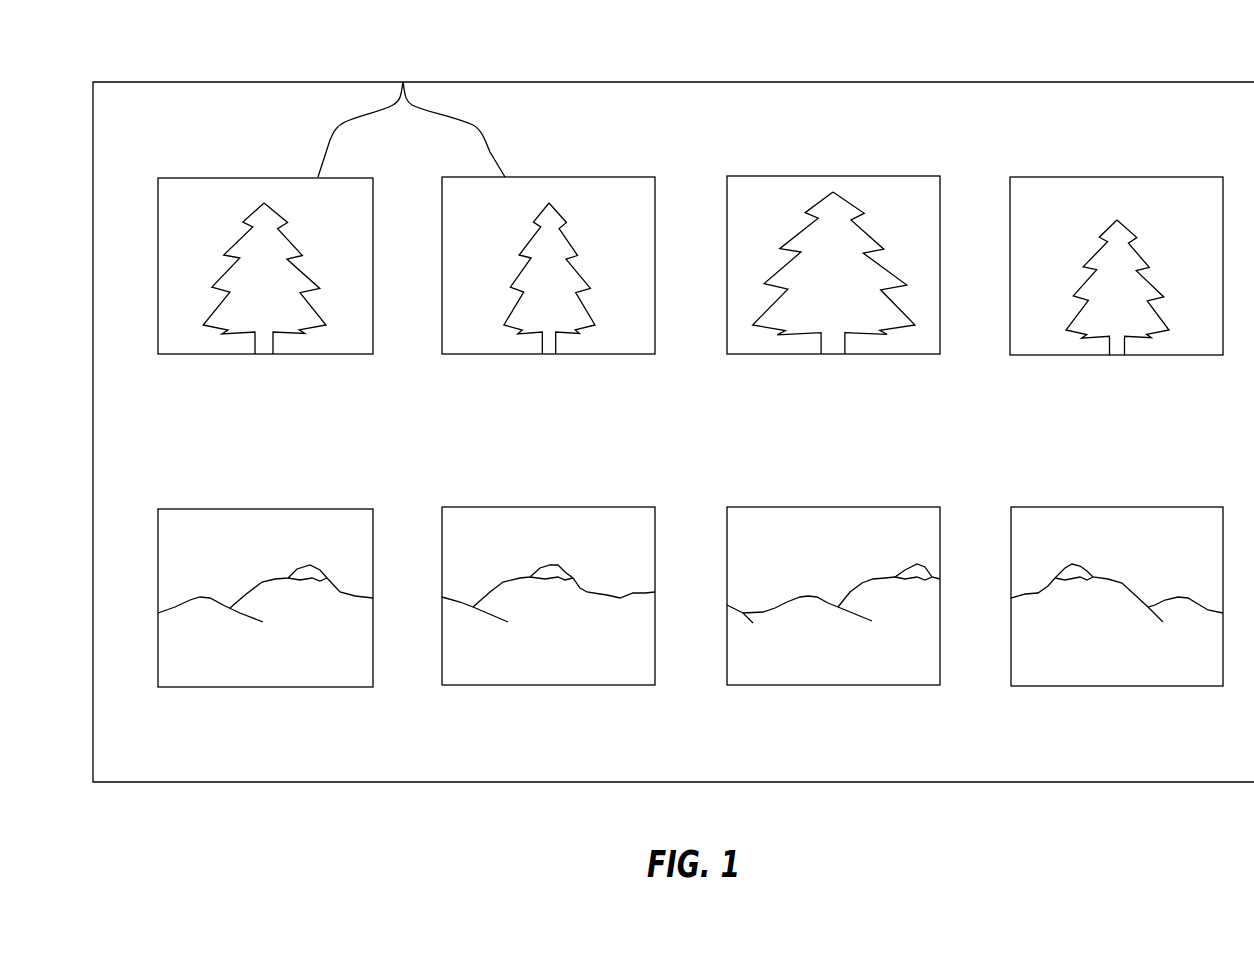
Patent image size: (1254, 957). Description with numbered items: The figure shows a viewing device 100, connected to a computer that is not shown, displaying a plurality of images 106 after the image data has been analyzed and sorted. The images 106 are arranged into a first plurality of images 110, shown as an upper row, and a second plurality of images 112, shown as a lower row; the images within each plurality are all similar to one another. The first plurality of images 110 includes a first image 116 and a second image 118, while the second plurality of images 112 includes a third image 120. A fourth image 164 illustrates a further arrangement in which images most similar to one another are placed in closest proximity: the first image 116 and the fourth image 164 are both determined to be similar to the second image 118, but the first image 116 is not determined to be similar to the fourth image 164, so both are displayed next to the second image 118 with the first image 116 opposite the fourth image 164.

The viewing device 100 is at (995, 70).
The plurality of images 106 is at (403, 82).
The first plurality of images 110 is at (133, 279).
The second plurality of images 112 is at (133, 603).
The first image 116 is at (320, 354).
The second image 118 is at (602, 354).
The fourth image 164 is at (885, 354).
The third image 120 is at (265, 509).